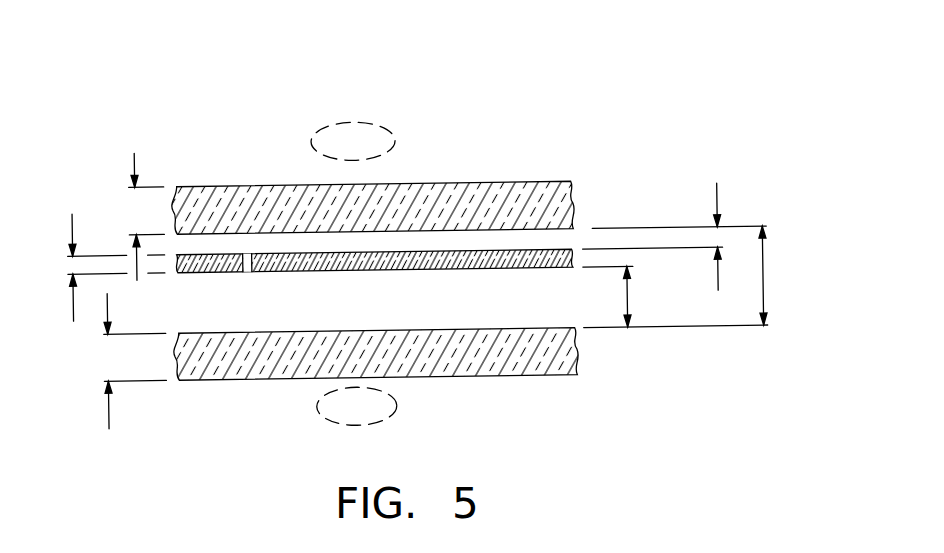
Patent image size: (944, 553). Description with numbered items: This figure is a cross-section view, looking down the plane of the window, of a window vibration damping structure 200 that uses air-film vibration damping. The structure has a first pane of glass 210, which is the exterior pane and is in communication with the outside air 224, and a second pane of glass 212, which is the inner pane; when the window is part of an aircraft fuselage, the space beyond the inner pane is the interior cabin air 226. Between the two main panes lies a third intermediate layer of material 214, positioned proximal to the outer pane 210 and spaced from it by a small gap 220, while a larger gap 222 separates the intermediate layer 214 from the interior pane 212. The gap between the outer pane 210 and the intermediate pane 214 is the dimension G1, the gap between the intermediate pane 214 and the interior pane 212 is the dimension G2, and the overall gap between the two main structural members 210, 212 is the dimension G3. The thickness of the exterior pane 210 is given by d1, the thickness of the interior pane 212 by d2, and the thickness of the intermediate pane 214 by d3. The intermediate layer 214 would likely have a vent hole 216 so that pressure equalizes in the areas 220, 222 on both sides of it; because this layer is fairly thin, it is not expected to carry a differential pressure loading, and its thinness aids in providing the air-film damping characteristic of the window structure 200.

The window vibration damping structure 200 is at (188, 44).
The first pane of glass 210 is at (331, 221).
The second pane of glass 212 is at (331, 366).
The intermediate layer of material 214 is at (414, 262).
The vent hole 216 is at (247, 258).
The gap 220 is at (576, 241).
The larger gap 222 is at (538, 301).
The outside air 224 is at (353, 141).
The interior cabin air 226 is at (356, 406).
The thickness of the exterior pane d1 is at (136, 153).
The thickness of the interior pane d2 is at (107, 408).
The thickness of the intermediate pane d3 is at (73, 302).
The gap between the outer pane and the intermediate pane G1 is at (718, 193).
The gap between the intermediate pane and the interior pane G2 is at (627, 297).
The overall gap G3 is at (763, 283).